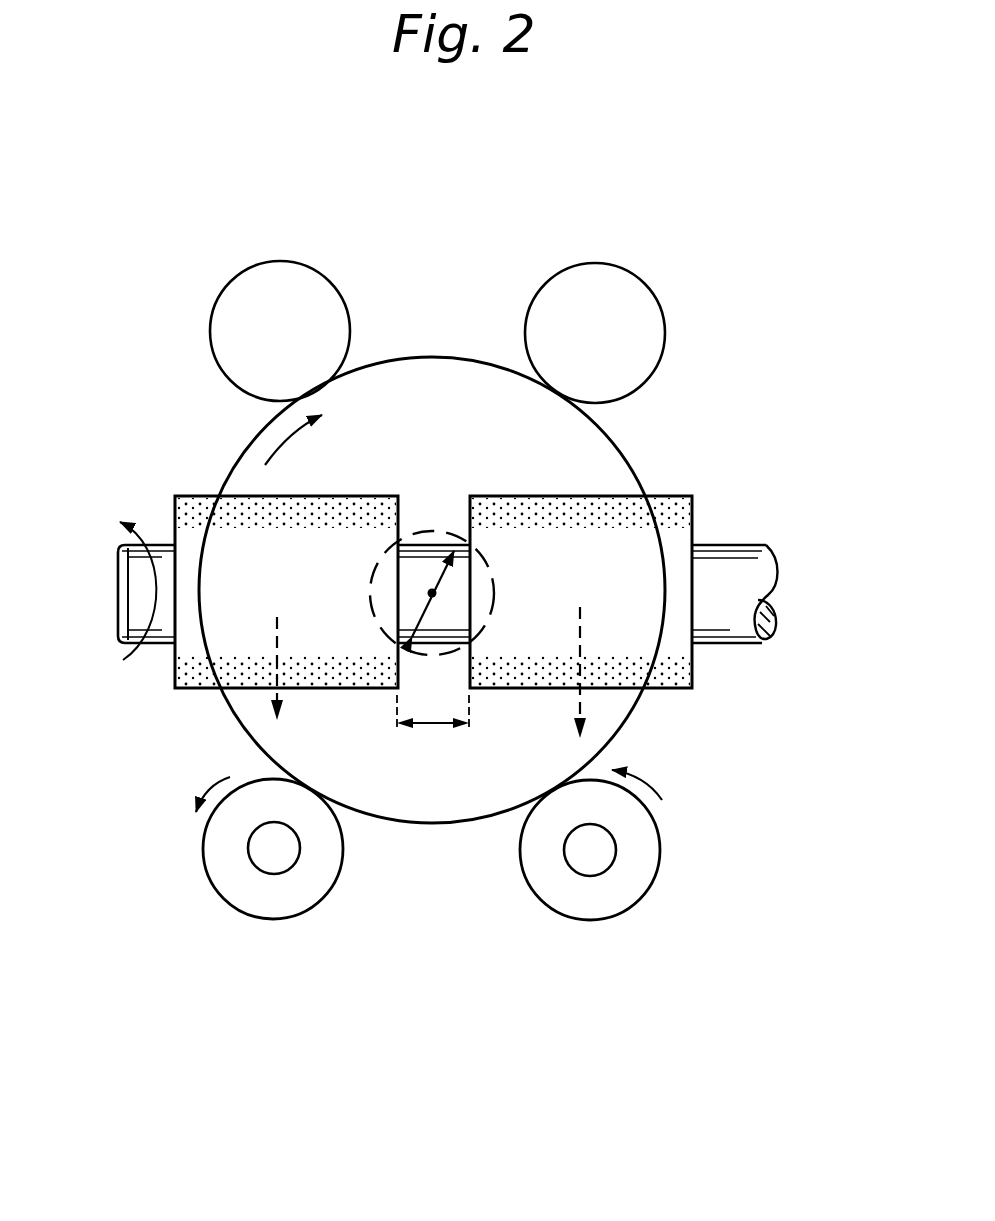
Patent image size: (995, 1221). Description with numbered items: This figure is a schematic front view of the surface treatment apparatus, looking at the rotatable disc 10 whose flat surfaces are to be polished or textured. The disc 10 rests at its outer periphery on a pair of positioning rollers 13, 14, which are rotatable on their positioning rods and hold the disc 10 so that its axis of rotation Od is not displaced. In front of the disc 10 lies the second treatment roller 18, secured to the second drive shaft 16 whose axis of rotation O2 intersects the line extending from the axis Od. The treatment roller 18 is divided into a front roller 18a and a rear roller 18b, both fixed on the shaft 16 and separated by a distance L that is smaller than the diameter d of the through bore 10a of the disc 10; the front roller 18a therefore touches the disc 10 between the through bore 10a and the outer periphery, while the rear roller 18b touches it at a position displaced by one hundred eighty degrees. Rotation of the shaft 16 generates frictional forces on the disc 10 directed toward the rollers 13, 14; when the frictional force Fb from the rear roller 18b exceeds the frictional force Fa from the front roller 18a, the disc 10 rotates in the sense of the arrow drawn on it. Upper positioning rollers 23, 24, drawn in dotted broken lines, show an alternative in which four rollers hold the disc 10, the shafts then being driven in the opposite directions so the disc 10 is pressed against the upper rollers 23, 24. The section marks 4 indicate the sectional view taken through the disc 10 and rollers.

The rotatable disc 10 is at (388, 392).
The through bore 10a is at (447, 640).
The positioning roller 13 is at (272, 900).
The positioning roller 14 is at (598, 902).
The second drive shaft 16 is at (118, 616).
The second treatment roller 18 is at (445, 614).
The front roller 18a is at (197, 684).
The rear roller 18b is at (672, 684).
The upper positioning roller 23 is at (207, 330).
The upper positioning roller 24 is at (658, 362).
The diameter of the through bore d is at (440, 550).
The axis of rotation of the disc Od is at (434, 592).
The axis of rotation of the second drive shaft O2 is at (768, 595).
The frictional force generated by the front rollers Fa is at (283, 703).
The frictional force generated by the rear rollers Fb is at (577, 712).
The distance between front and rear rollers L is at (432, 725).
The section line for FIG. 4 is at (437, 292).